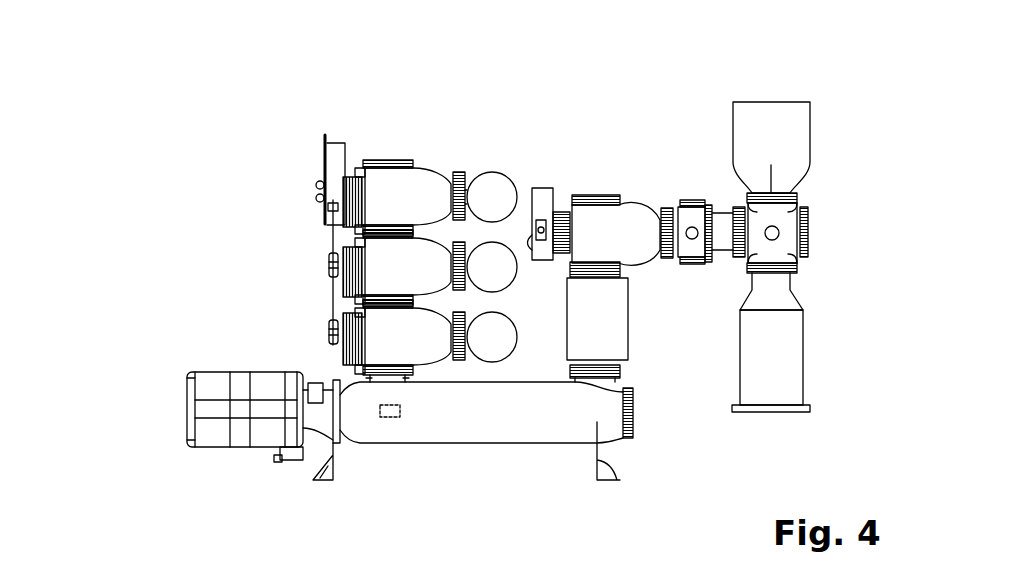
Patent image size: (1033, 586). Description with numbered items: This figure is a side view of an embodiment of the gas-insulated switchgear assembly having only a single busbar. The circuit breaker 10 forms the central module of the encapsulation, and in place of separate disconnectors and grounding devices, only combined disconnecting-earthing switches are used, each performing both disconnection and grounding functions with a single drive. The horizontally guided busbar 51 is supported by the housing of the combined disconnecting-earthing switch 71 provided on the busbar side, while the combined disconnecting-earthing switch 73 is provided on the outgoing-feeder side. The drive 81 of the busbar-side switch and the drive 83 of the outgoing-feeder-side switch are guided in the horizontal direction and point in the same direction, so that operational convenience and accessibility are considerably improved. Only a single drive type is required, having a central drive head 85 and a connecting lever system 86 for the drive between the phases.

The circuit breaker 10 is at (474, 415).
The busbar 51 is at (495, 340).
The combined disconnecting-earthing switch 71 is at (391, 337).
The combined disconnecting-earthing switch 73 is at (625, 232).
The drive 81 is at (345, 357).
The drive 83 is at (545, 205).
The central drive head 85 is at (335, 160).
The connecting lever system 86 is at (330, 295).